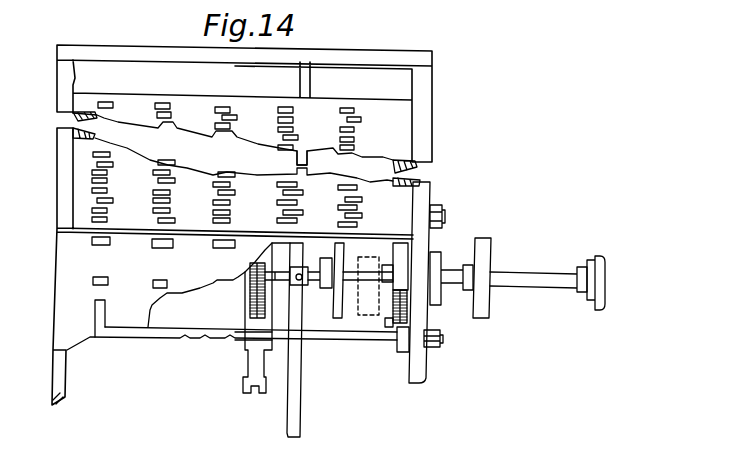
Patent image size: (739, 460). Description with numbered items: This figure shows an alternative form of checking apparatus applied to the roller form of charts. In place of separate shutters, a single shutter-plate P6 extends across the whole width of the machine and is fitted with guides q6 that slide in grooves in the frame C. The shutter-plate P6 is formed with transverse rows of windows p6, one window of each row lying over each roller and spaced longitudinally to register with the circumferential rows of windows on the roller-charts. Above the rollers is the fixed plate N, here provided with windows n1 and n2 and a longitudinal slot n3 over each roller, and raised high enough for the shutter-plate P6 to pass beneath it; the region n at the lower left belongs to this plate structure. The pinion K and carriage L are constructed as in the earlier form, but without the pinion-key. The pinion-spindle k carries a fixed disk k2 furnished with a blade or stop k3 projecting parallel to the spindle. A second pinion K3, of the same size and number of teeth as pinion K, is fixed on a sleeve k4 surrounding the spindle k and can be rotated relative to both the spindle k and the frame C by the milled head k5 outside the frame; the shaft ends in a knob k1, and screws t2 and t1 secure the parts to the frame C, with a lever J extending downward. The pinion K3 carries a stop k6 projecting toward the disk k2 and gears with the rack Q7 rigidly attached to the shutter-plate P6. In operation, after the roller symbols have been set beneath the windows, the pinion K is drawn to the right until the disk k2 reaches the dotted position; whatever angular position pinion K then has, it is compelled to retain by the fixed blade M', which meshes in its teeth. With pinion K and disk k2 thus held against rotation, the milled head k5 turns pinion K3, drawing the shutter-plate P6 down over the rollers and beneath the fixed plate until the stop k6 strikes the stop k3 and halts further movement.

The guides q6 is at (93, 122).
The windows p6 is at (340, 131).
The shutter-plate P6 is at (249, 147).
The window n1 is at (153, 245).
The window n2 is at (153, 285).
The longitudinal slot n3 is at (95, 305).
The slide plate n is at (56, 401).
The pinion K is at (250, 305).
The fixed blade M' is at (286, 287).
The lever J is at (300, 386).
The disk k2 is at (326, 281).
The blade or stop k3 is at (368, 286).
The rack Q7 is at (399, 252).
The pinion K3 is at (407, 313).
The stop k6 is at (386, 328).
The frame C is at (423, 367).
The screw t2 is at (452, 204).
The screw t1 is at (443, 340).
The sleeve k4 is at (452, 268).
The milled head k5 is at (490, 248).
The pinion-spindle k is at (538, 289).
The knob k1 is at (592, 261).
The carriage L is at (240, 338).